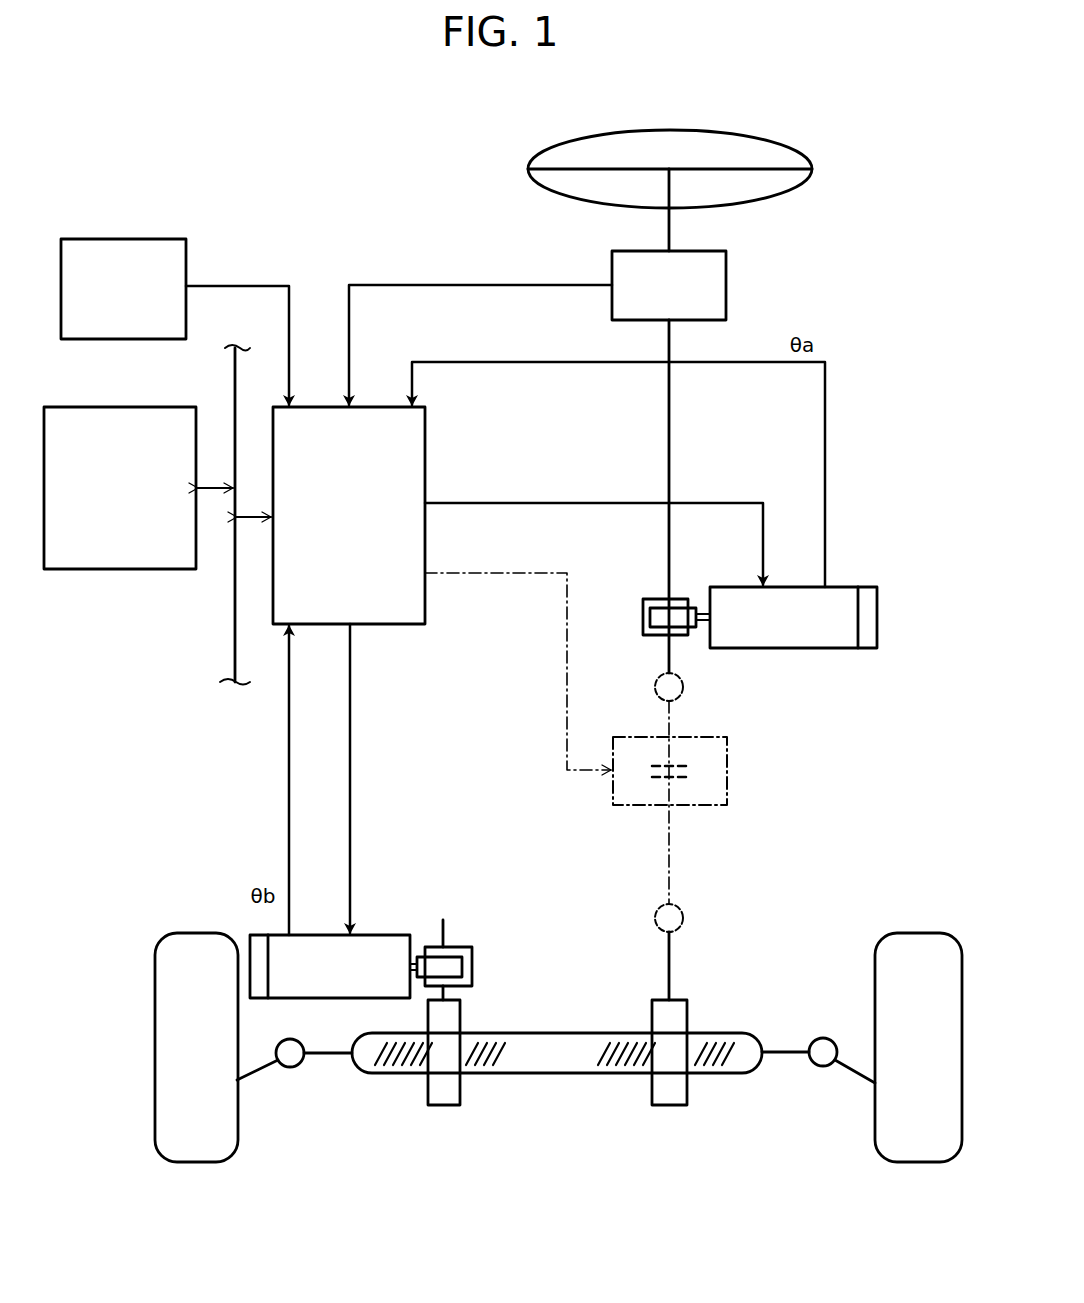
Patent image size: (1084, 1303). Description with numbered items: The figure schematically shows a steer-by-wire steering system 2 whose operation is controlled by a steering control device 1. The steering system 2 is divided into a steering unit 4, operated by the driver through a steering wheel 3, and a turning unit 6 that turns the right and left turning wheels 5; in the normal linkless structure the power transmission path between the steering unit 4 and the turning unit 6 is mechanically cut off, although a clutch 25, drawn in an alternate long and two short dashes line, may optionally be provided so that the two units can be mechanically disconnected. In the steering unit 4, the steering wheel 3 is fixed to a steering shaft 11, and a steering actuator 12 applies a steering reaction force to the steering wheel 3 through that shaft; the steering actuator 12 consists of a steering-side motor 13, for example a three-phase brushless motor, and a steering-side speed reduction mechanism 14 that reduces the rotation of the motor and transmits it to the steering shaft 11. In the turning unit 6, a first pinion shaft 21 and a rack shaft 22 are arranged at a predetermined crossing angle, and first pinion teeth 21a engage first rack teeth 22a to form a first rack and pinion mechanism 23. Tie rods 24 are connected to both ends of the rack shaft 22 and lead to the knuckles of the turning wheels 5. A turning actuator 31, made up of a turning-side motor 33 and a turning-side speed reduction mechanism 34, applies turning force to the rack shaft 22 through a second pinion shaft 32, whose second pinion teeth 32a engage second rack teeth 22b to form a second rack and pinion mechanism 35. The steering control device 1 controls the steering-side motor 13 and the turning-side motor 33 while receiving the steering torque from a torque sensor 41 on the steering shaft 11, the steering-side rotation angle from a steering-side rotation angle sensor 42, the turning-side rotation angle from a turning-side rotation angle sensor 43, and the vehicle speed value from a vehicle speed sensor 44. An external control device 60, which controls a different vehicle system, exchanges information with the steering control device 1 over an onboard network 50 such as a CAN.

The steering control device 1 is at (420, 624).
The steering system 2 is at (833, 134).
The steering wheel 3 is at (757, 141).
The steering unit 4 is at (858, 530).
The turning wheels 5 is at (238, 1128).
The turning unit 6 is at (808, 858).
The steering shaft 11 is at (675, 224).
The steering actuator 12 is at (738, 691).
The steering-side motor 13 is at (795, 650).
The steering-side speed reduction mechanism 14 is at (637, 610).
The first pinion shaft 21 is at (669, 969).
The first pinion teeth 21a is at (669, 1105).
The rack shaft 22 is at (557, 1084).
The first rack teeth 22a is at (628, 1068).
The second rack teeth 22b is at (481, 1066).
The first rack and pinion mechanism 23 is at (625, 1132).
The tie rods 24 is at (322, 1060).
The clutch 25 is at (727, 778).
The turning actuator 31 is at (491, 899).
The second pinion shaft 32 is at (449, 930).
The second pinion teeth 32a is at (446, 1105).
The turning-side motor 33 is at (383, 935).
The turning-side speed reduction mechanism 34 is at (479, 975).
The second rack and pinion mechanism 35 is at (419, 1084).
The torque sensor 41 is at (727, 288).
The steering-side rotation angle sensor 42 is at (866, 650).
The turning-side rotation angle sensor 43 is at (258, 998).
The vehicle speed sensor 44 is at (128, 239).
The onboard network 50 is at (233, 372).
The external control device 60 is at (128, 407).